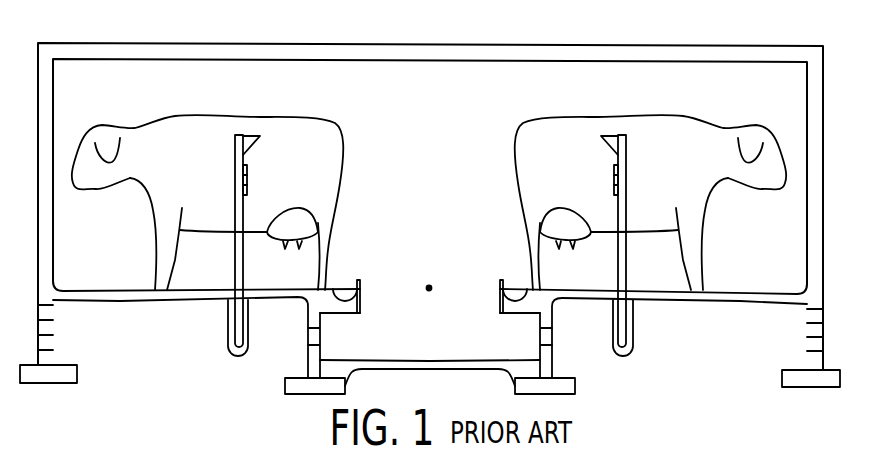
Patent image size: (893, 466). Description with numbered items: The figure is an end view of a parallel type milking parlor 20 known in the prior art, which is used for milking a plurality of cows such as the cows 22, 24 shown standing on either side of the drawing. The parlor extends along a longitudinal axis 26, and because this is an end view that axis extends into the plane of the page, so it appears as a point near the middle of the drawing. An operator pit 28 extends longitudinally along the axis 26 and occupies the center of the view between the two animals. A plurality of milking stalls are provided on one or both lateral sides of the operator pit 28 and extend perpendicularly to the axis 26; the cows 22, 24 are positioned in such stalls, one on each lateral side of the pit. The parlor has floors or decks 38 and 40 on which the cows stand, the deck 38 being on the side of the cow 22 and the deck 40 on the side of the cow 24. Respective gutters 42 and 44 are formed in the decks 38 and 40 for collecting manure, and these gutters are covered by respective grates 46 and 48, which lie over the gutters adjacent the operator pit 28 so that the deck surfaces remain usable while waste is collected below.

The parallel milking parlor 20 is at (404, 36).
The cow 22 is at (691, 127).
The cow 24 is at (226, 117).
The longitudinal axis 26 is at (430, 284).
The operator pit 28 is at (446, 337).
The floor or deck 38 is at (595, 290).
The floor or deck 40 is at (285, 287).
The gutter 42 is at (521, 303).
The gutter 44 is at (341, 303).
The grate 46 is at (514, 288).
The grate 48 is at (348, 288).